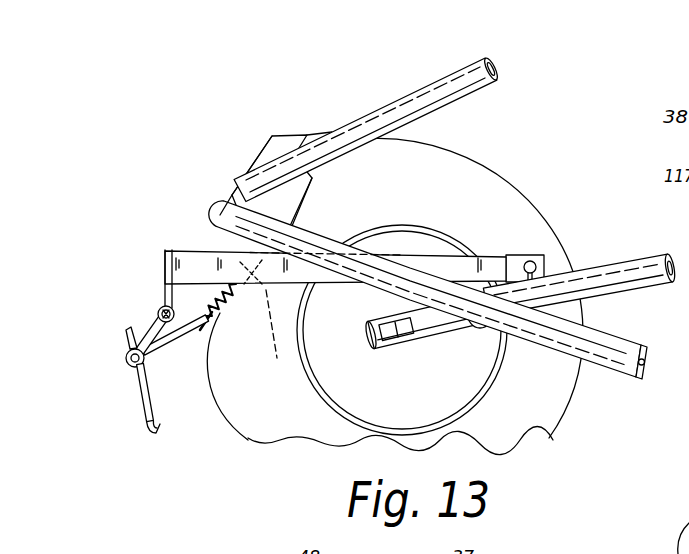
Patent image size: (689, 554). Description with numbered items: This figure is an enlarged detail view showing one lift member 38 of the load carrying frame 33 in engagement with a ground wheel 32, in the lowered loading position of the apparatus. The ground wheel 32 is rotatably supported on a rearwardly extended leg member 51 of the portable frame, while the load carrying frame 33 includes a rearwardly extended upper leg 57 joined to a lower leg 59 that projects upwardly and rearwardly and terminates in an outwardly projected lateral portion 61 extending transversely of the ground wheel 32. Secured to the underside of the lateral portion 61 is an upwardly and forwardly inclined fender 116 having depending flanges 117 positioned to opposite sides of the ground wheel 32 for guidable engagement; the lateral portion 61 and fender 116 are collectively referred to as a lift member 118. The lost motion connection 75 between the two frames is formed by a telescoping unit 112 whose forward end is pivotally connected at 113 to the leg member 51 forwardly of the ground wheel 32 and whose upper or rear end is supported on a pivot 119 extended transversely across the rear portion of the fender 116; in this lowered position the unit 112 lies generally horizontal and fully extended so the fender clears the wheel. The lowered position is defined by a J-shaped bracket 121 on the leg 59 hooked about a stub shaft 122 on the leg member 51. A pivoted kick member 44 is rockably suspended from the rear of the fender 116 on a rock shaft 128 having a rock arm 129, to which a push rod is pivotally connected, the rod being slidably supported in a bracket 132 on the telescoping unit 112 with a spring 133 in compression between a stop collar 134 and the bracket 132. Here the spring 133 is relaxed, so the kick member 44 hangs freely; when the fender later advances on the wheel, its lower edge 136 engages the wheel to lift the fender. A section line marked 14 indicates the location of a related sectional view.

The ground wheel 32 is at (258, 423).
The lost motion connection 75 is at (337, 307).
The fender 116 is at (272, 136).
The lift member 118 is at (238, 149).
The depending flange 117 is at (300, 193).
The load carrying frame 33 is at (401, 74).
The leg 57 is at (471, 62).
The pivot connection 113 is at (546, 262).
The telescoping unit 112 is at (165, 267).
The stub shaft 122 is at (447, 337).
The J-shaped bracket 121 is at (467, 330).
The leg member 51 is at (628, 256).
The lateral portion 61 is at (215, 208).
The leg 59 is at (580, 362).
The bracket 132 is at (279, 338).
The spring 133 is at (217, 316).
The stop collar 134 is at (203, 328).
The rock arm 129 is at (143, 364).
The pivot 119 is at (158, 314).
The rock shaft 128 is at (128, 363).
The pivoted kick member 44 is at (135, 405).
The lower edge 136 is at (157, 433).
The lift member 38 is at (216, 154).
The section line 14- 14 is at (252, 256).